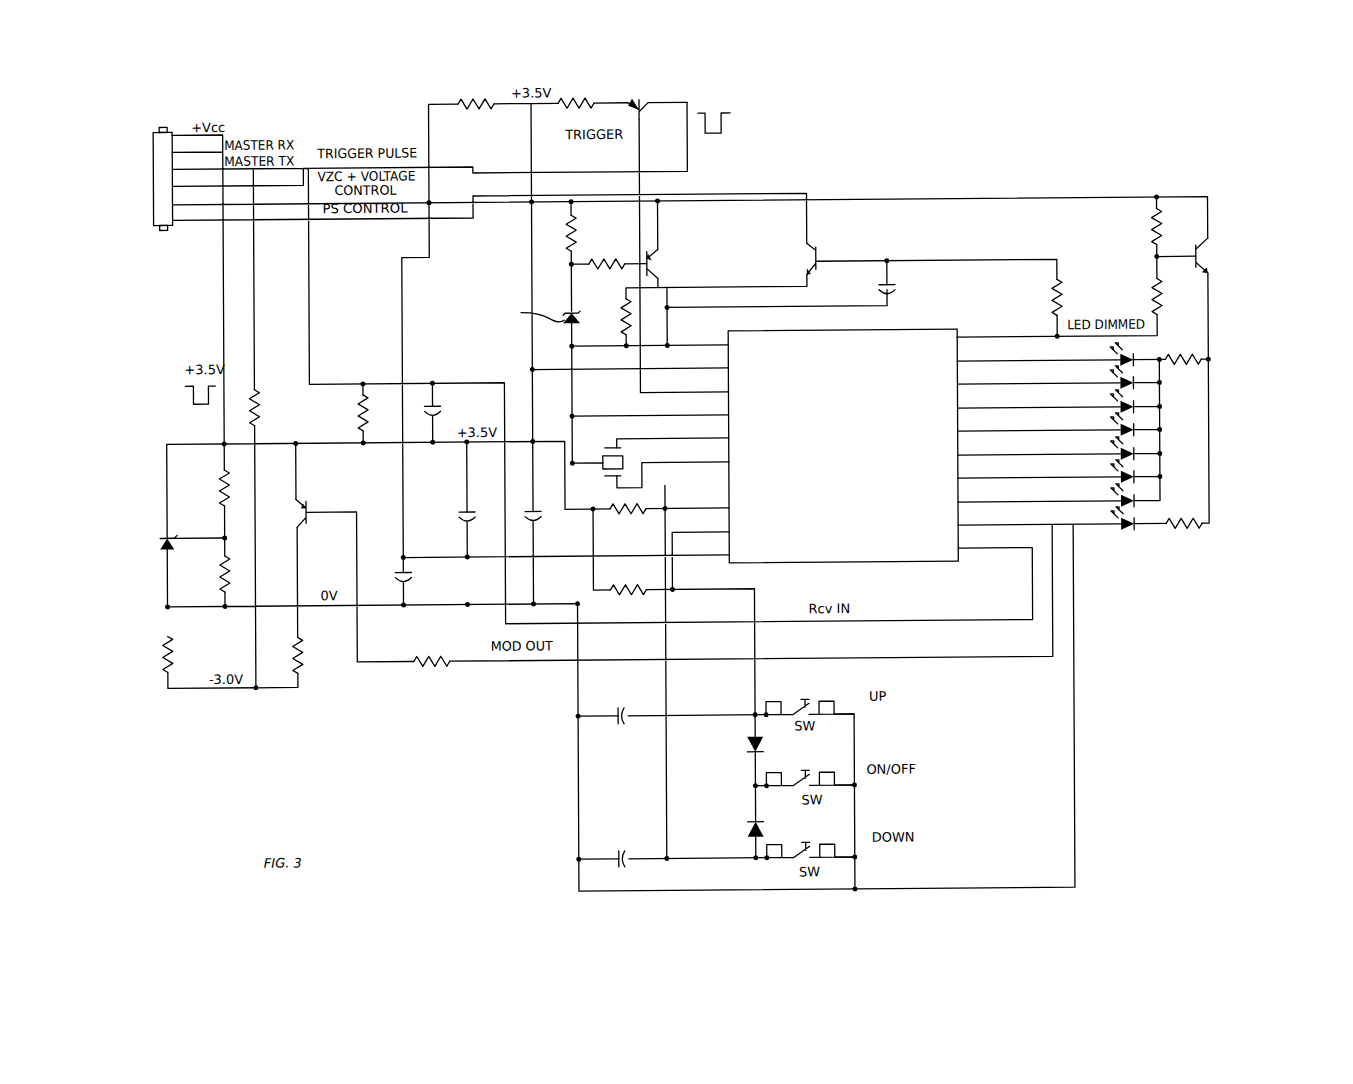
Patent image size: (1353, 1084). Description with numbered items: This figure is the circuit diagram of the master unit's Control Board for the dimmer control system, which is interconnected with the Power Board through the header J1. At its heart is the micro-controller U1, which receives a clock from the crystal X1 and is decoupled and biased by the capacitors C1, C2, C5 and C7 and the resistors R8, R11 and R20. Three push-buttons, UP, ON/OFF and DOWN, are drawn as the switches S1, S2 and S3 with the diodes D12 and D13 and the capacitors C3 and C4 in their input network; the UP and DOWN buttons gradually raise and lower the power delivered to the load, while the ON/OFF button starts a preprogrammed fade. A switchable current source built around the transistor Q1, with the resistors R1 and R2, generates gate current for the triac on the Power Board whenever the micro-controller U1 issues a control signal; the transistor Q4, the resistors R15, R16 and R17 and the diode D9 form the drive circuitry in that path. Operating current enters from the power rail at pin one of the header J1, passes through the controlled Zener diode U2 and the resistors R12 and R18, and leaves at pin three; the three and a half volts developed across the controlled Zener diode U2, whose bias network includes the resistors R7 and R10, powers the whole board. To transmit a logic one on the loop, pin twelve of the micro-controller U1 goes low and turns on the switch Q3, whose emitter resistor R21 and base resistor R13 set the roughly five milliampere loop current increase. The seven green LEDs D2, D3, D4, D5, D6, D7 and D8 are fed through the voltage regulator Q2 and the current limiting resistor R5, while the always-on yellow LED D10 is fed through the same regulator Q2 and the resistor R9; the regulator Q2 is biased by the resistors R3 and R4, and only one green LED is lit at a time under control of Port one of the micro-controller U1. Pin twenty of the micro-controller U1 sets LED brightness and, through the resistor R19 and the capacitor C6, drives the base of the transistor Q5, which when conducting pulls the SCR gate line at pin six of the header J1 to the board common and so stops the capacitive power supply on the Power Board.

The header J1 is at (163, 182).
The resistor 10K R1 is at (476, 108).
The resistor 430 R2 is at (576, 105).
The transistor Q1 is at (666, 113).
The resistor 2.4K R15 is at (586, 231).
The resistor 6.8K R16 is at (609, 265).
The resistor 10K R17 is at (614, 311).
The transistor MMBT4403 Q4 is at (679, 269).
The zener diode MA8024 D9 is at (528, 321).
The transistor Q5 is at (857, 255).
The capacitor 1uF 16V C6 is at (912, 292).
The resistor 12k R19 is at (1072, 295).
The resistor 2k R3 is at (1165, 226).
The resistor 7.5k R4 is at (1172, 290).
The voltage regulator Q2 is at (1237, 252).
The current limiting resistor R5 is at (1183, 359).
The current limiting resistor R9 is at (1184, 523).
The green LED D2 is at (1081, 355).
The green LED D3 is at (1081, 378).
The green LED D4 is at (1081, 402).
The green LED D5 is at (1082, 425).
The green LED D6 is at (1082, 449).
The green LED D7 is at (1082, 472).
The green LED D8 is at (1082, 496).
The yellow LED D10 is at (1081, 519).
The micro-controller U1 is at (846, 446).
The crystal 4MHz X1 is at (629, 456).
The resistor 10k R8 is at (628, 510).
The resistor 10k R11 is at (628, 591).
The capacitor 0.1uF C2 is at (550, 515).
The capacitor 10uF 10V C1 is at (481, 522).
The capacitor 270pF C5 is at (454, 403).
The capacitor 0.01uF C7 is at (430, 582).
The resistor 75k R20 is at (377, 409).
The resistor R18 is at (282, 409).
The resistor 12k R7 is at (215, 488).
The controlled Zener diode U2 is at (188, 532).
The resistor 30k R10 is at (214, 575).
The resistor R12 is at (195, 653).
The resistor 825 1% R21 is at (324, 658).
The switch Q3 is at (326, 508).
The resistor 10k MOD OUT R13 is at (438, 652).
The capacitor 0.1uF C3 is at (627, 719).
The capacitor 0.1uF C4 is at (628, 859).
The diode 1N4148 D12 is at (730, 748).
The diode 1N4148 D13 is at (733, 832).
The switch UP S1 is at (810, 696).
The switch ON/OFF S2 is at (810, 767).
The switch DOWN S3 is at (811, 839).